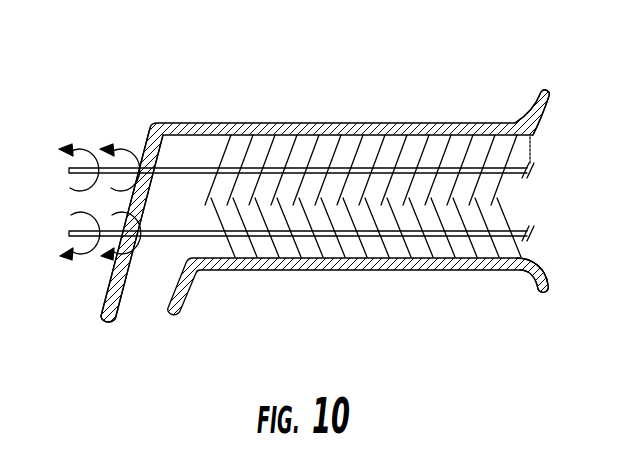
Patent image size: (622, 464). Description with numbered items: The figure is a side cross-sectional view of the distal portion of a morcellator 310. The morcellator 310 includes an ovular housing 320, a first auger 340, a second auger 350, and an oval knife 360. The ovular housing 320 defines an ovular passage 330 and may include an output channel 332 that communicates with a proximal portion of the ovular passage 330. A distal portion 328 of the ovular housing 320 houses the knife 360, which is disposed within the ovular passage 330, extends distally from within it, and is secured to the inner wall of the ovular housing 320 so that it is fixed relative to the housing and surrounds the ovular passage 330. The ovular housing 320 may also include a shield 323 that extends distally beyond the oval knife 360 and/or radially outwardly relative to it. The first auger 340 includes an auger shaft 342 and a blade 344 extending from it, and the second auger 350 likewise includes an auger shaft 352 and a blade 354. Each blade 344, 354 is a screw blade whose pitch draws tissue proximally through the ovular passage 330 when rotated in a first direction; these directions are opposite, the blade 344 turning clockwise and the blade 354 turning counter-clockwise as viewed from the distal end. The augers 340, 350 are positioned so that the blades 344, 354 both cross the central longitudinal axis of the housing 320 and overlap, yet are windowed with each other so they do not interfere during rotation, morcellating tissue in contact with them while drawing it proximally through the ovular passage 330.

The morcellator 310 is at (269, 102).
The ovular housing 320 is at (352, 123).
The shield 323 is at (548, 294).
The distal portion 328 is at (520, 273).
The ovular passage 330 is at (173, 190).
The output channel 332 is at (135, 285).
The first auger 340 is at (440, 162).
The auger shaft 342 is at (457, 163).
The blade 344 is at (287, 158).
The second auger 350 is at (429, 237).
The auger shaft 352 is at (328, 210).
The blade 354 is at (263, 238).
The oval knife 360 is at (534, 130).